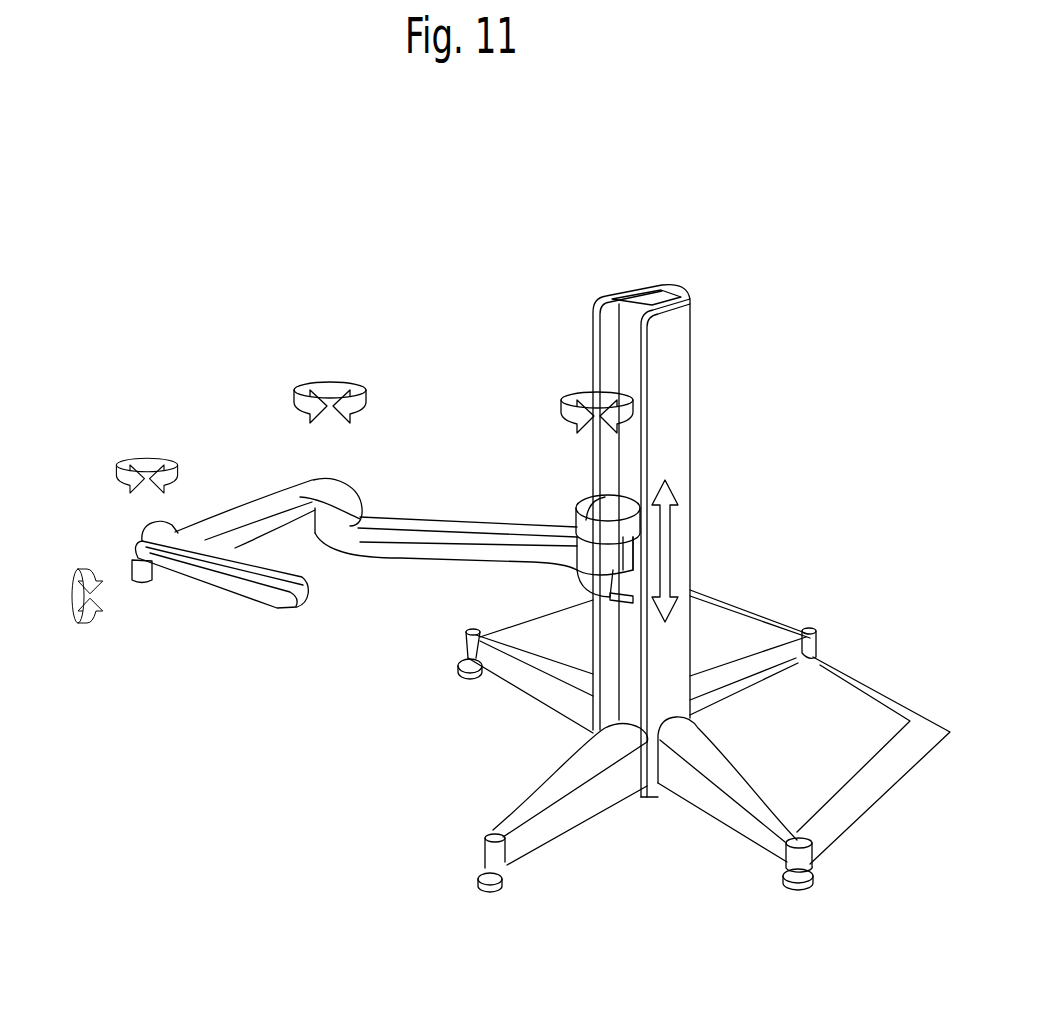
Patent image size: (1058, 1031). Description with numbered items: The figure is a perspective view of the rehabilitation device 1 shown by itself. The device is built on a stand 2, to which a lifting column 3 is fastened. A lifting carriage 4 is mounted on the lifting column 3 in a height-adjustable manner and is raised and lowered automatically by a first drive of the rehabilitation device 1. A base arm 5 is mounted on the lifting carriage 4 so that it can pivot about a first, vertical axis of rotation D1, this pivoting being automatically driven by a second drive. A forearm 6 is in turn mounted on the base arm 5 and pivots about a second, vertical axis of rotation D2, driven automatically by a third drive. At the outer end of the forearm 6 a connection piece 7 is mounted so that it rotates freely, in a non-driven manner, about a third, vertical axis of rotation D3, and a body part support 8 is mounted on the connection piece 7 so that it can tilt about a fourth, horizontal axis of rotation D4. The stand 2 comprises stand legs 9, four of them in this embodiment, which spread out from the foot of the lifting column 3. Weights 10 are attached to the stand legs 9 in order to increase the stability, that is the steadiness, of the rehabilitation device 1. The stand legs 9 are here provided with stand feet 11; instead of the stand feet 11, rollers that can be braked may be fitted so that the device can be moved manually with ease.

The rehabilitation device 1 is at (486, 300).
The stand 2 is at (595, 840).
The lifting column 3 is at (678, 433).
The lifting carriage 4 is at (595, 513).
The base arm 5 is at (445, 532).
The forearm 6 is at (251, 508).
The connection piece 7 is at (150, 582).
The body part support 8 is at (253, 587).
The stand legs 9 is at (553, 693).
The weights 10 is at (713, 623).
The stand feet 11 is at (460, 668).
The first, vertical axis of rotation D1 is at (595, 400).
The second, vertical axis of rotation D2 is at (327, 392).
The third, vertical axis of rotation D3 is at (145, 466).
The fourth, horizontal axis of rotation D4 is at (68, 605).